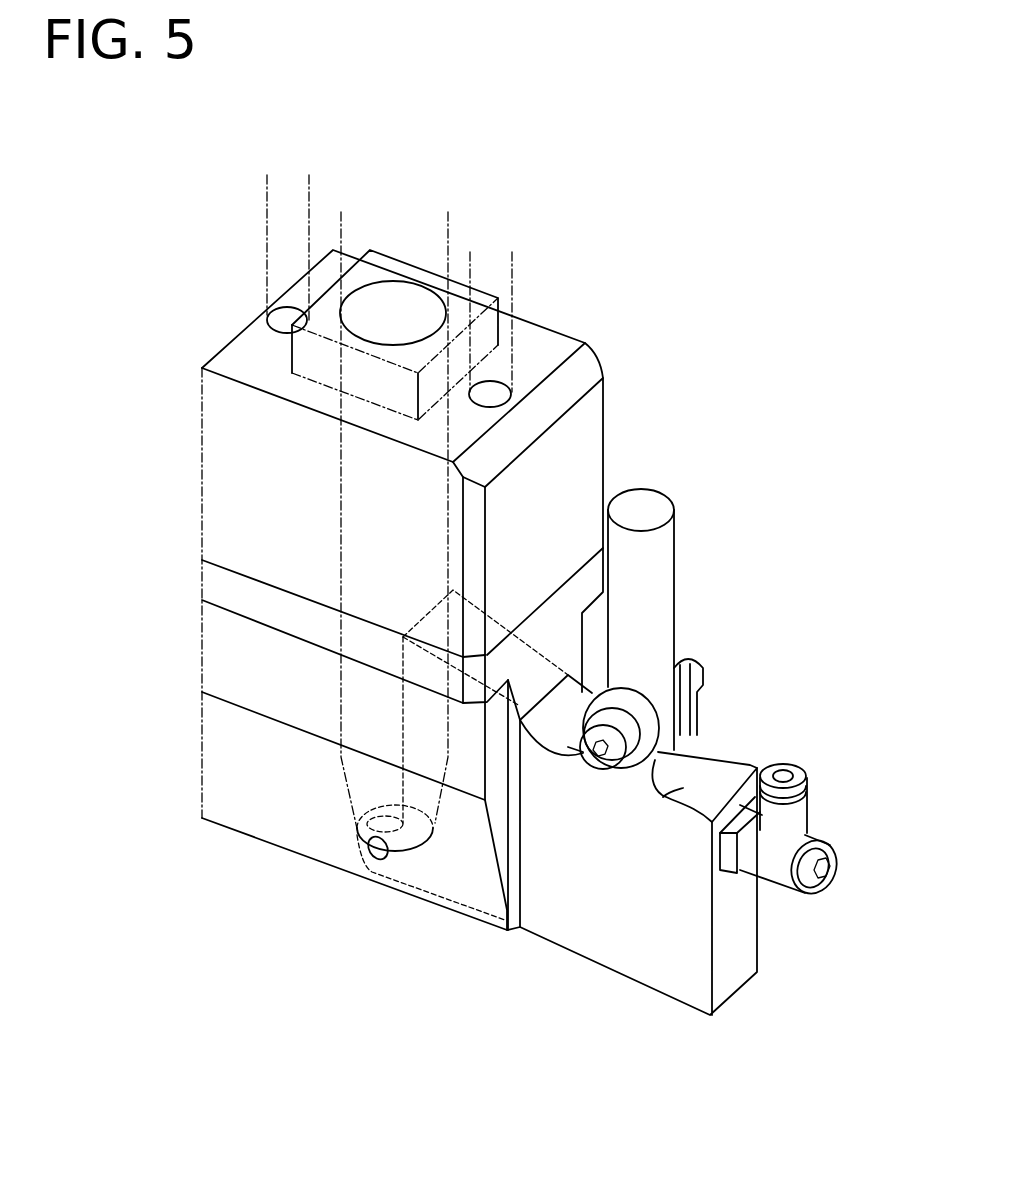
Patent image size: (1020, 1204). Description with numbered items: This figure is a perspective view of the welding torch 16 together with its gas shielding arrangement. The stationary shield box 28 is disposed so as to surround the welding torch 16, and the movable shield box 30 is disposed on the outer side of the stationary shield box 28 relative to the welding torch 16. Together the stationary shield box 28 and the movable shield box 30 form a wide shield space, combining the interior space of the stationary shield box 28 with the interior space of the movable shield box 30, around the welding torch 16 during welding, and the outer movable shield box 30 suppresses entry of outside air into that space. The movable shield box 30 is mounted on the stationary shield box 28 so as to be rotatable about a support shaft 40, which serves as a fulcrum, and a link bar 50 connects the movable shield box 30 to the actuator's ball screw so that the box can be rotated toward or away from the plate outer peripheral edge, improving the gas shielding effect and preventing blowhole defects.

The welding torch 16 is at (340, 477).
The stationary shield box 28 is at (429, 590).
The support shaft 40 is at (377, 858).
The link bar 50 is at (660, 613).
The movable shield box 30 is at (710, 869).